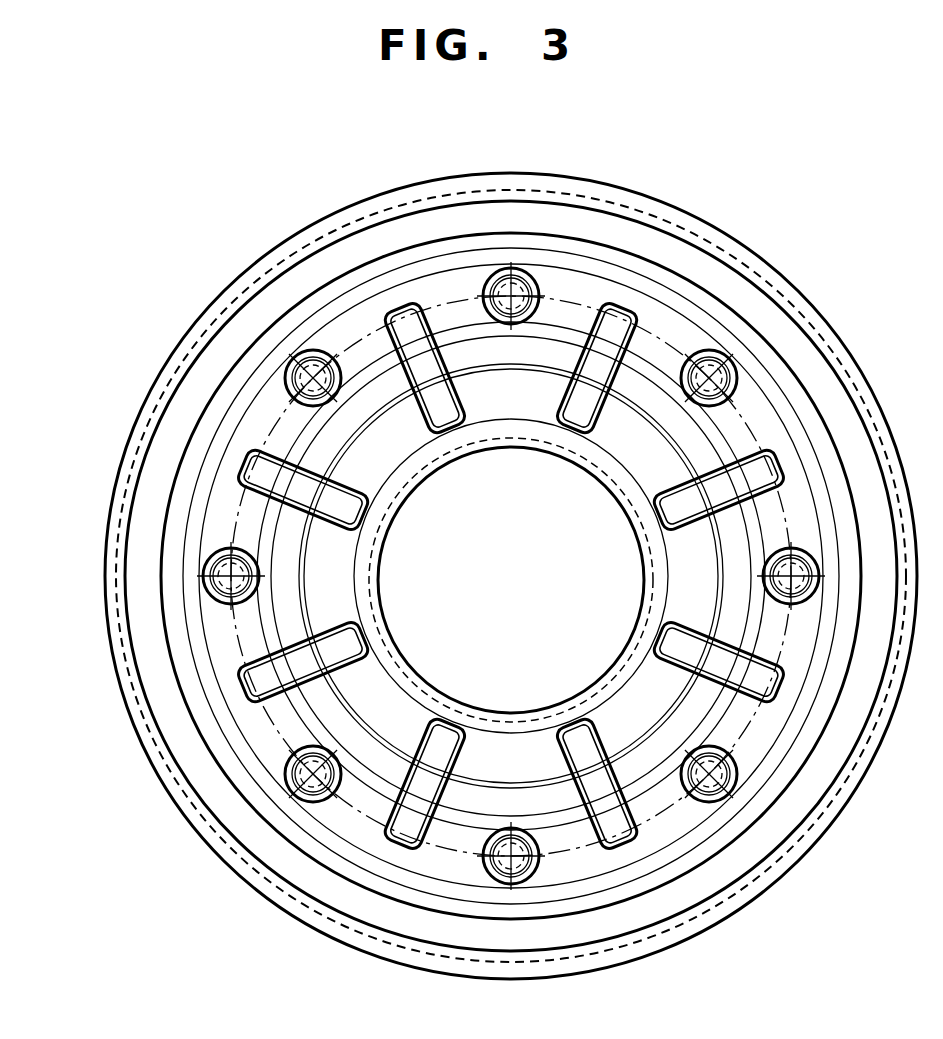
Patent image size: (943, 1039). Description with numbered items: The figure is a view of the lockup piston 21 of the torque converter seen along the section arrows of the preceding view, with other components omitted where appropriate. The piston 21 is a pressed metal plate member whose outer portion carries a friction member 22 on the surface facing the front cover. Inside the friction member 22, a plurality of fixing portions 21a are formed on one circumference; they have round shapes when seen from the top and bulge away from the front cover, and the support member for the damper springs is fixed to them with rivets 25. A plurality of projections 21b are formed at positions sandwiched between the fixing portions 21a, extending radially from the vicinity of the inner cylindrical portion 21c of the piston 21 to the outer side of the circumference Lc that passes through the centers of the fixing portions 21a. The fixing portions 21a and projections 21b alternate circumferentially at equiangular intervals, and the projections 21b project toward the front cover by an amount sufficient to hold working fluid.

The piston 21 is at (609, 178).
The fixing portions 21a is at (497, 273).
The projections 21b is at (447, 427).
The inner cylindrical portion 21c is at (460, 702).
The friction member 22 is at (722, 272).
The rivets 25 is at (511, 296).
The circumference Lc is at (272, 427).